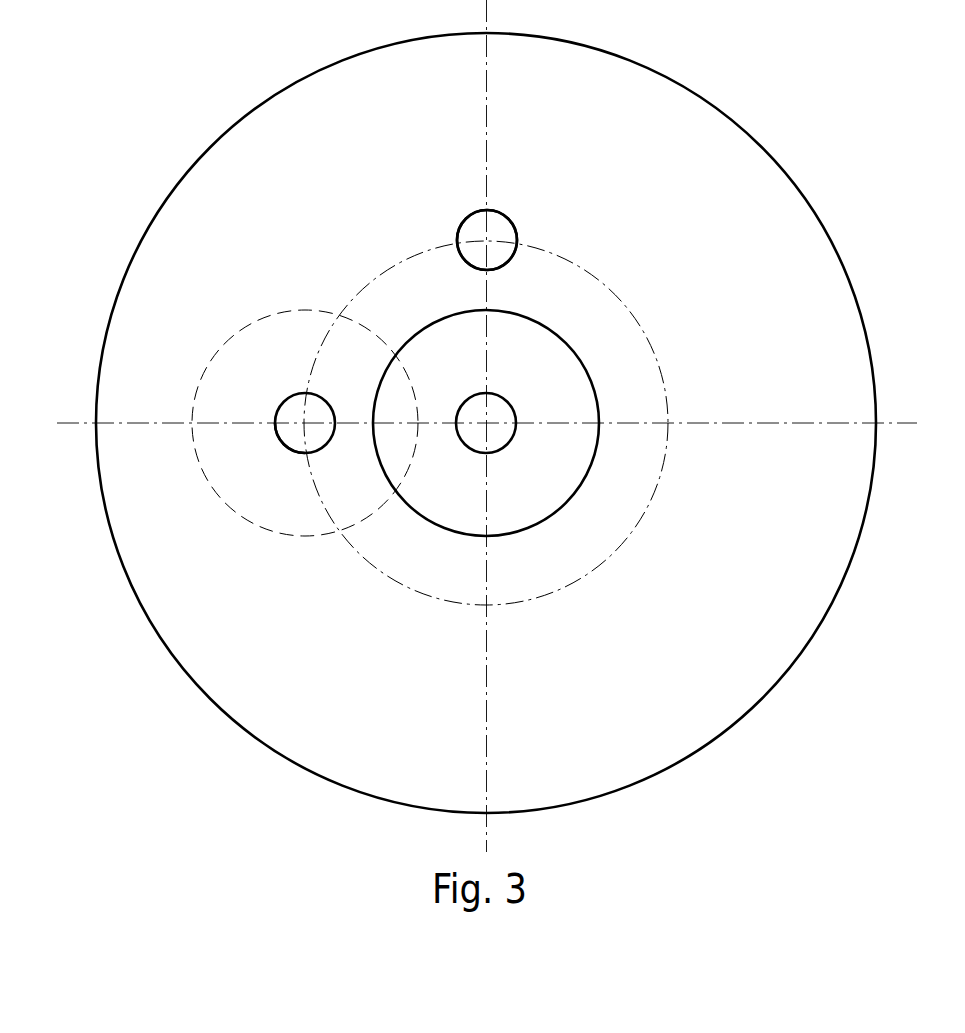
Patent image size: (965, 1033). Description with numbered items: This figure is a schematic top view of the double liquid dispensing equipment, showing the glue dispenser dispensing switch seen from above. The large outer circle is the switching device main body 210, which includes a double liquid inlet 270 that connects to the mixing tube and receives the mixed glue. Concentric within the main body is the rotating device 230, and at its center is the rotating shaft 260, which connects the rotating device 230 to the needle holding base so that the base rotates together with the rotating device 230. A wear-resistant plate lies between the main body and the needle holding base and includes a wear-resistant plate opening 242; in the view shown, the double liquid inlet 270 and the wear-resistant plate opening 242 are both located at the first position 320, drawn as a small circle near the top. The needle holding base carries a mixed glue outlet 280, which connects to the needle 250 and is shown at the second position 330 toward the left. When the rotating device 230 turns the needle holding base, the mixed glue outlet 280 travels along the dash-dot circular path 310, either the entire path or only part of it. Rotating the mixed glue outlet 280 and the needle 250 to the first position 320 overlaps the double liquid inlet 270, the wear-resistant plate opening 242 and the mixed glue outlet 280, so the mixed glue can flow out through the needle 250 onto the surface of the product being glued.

The switching device main body 210 is at (827, 230).
The rotating device 230 is at (599, 440).
The needle 250 is at (218, 352).
The rotating shaft 260 is at (505, 398).
The double liquid inlet 270 is at (529, 211).
The wear-resistant plate opening 242 is at (497, 228).
The mixed glue outlet 280 is at (290, 413).
The circular path 310 is at (648, 340).
The first position 320 is at (468, 217).
The second position 330 is at (277, 437).